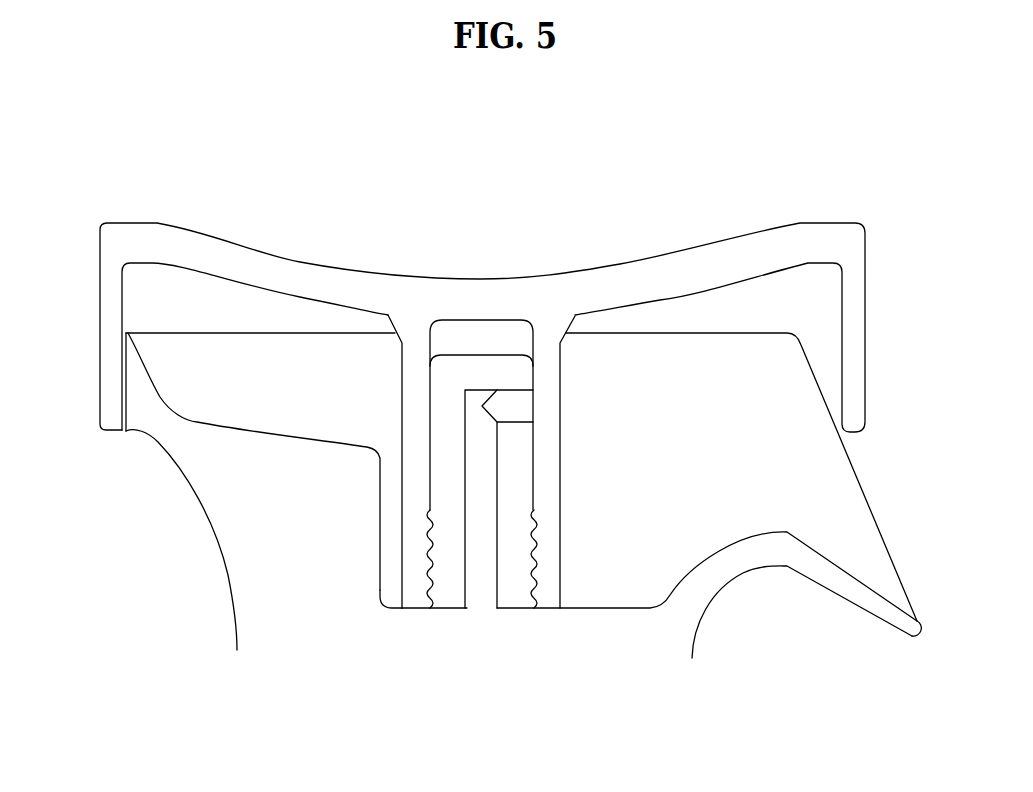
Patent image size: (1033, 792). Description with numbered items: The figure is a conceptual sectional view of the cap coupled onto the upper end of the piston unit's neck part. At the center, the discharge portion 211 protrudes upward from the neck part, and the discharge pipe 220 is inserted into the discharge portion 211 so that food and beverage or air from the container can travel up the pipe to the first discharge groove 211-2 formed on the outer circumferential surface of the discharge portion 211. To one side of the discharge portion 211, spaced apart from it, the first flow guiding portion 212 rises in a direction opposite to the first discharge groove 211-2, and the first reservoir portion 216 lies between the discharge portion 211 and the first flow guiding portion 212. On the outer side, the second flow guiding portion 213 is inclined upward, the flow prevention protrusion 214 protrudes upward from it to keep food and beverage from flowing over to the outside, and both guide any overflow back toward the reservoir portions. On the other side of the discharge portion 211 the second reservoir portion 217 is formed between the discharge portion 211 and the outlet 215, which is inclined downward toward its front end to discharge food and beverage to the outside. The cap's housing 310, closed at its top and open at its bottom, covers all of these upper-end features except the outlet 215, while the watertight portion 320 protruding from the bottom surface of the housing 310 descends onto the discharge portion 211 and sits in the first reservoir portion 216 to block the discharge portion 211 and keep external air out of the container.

The housing 310 is at (228, 267).
The discharge portion 211 is at (480, 353).
The first discharge groove 211-2 is at (530, 408).
The discharge pipe 220 is at (483, 472).
The first flow guiding portion 212 is at (345, 510).
The second flow guiding portion 213 is at (178, 437).
The flow prevention protrusion 214 is at (142, 404).
The watertight portion 320 is at (418, 467).
The first reservoir portion 216 is at (392, 608).
The second reservoir portion 217 is at (632, 593).
The outlet 215 is at (880, 602).